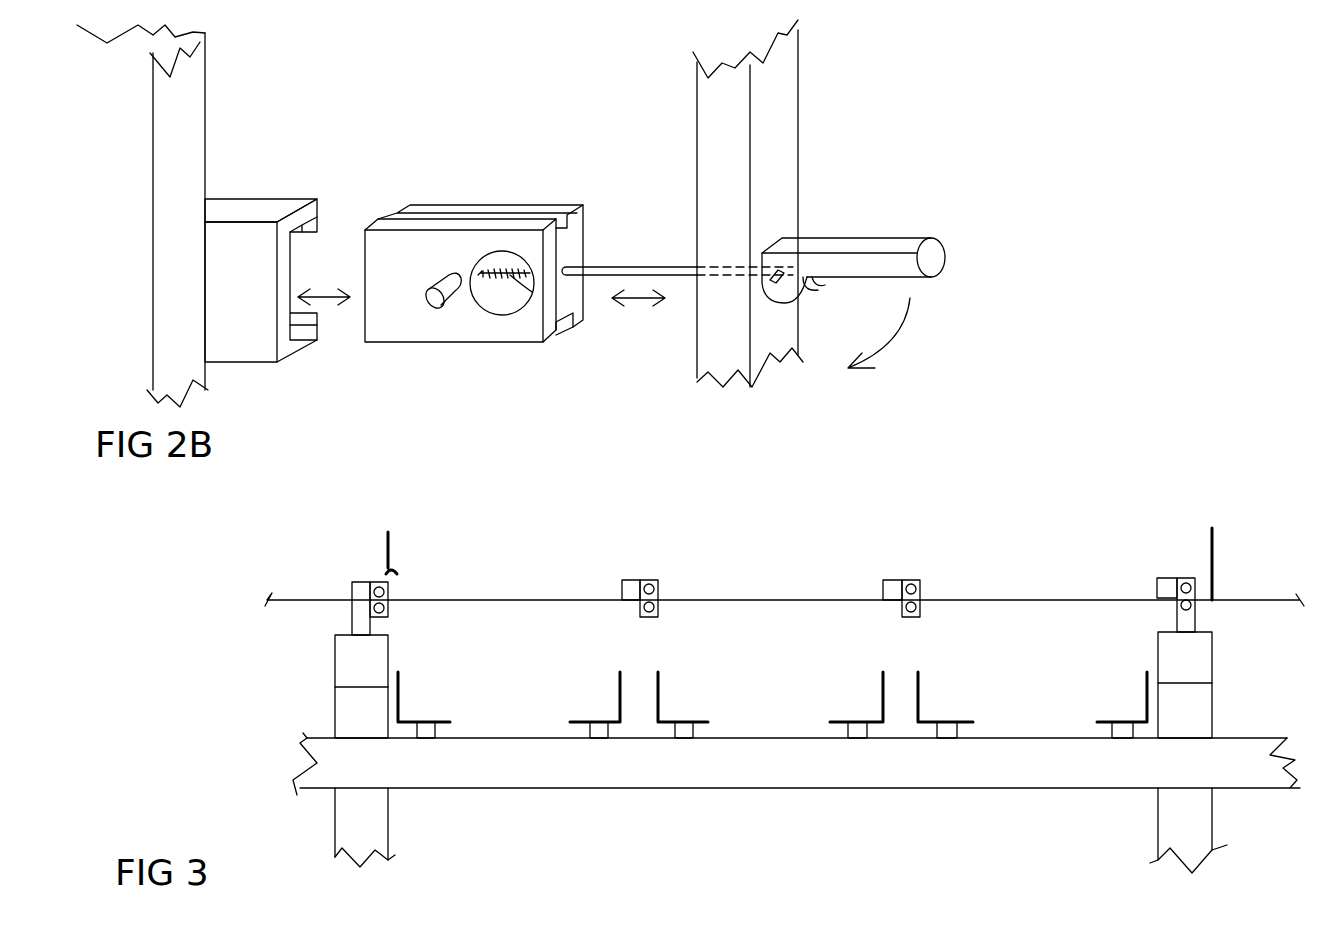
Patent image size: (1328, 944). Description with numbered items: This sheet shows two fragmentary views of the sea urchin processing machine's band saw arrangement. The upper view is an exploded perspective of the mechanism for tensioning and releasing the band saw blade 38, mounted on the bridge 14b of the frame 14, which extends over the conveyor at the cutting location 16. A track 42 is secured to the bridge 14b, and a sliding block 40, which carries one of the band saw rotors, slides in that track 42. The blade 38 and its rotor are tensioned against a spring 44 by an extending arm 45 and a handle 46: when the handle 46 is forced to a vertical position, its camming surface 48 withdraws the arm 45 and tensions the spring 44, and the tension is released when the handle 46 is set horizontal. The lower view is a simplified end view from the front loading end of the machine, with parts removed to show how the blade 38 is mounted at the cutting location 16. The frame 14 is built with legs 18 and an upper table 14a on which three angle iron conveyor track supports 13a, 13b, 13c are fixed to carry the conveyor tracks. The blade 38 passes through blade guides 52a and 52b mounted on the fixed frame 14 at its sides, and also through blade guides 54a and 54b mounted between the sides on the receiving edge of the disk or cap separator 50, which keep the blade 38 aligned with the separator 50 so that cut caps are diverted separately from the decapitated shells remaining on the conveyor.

In FIG. 2B, the bridge 14b is at (205, 78).
In FIG. 2B, the track 42 is at (258, 200).
In FIG. 2B, the sliding block 40 is at (408, 338).
In FIG. 2B, the spring 44 is at (500, 253).
In FIG. 2B, the extending arm 45 is at (630, 266).
In FIG. 2B, the handle 46 is at (882, 238).
In FIG. 2B, the camming surface 48 is at (795, 290).
In FIG. 3, the band saw blade 38 is at (515, 578).
In FIG. 3, the upper table 14a is at (793, 777).
In FIG. 3, the frame 14 is at (338, 665).
In FIG. 3, the legs 18 is at (388, 831).
In FIG. 3, the blade guide 52b is at (370, 582).
In FIG. 3, the blade guide 52a is at (1178, 578).
In FIG. 3, the disk or cap separator 50 is at (392, 547).
In FIG. 3, the blade guide 54b is at (633, 580).
In FIG. 3, the blade guide 54a is at (923, 552).
In FIG. 3, the cutting location 16 is at (1098, 572).
In FIG. 3, the angle iron conveyor track support 13a is at (565, 712).
In FIG. 3, the angle iron conveyor track support 13b is at (823, 712).
In FIG. 3, the angle iron conveyor track support 13c is at (1107, 707).